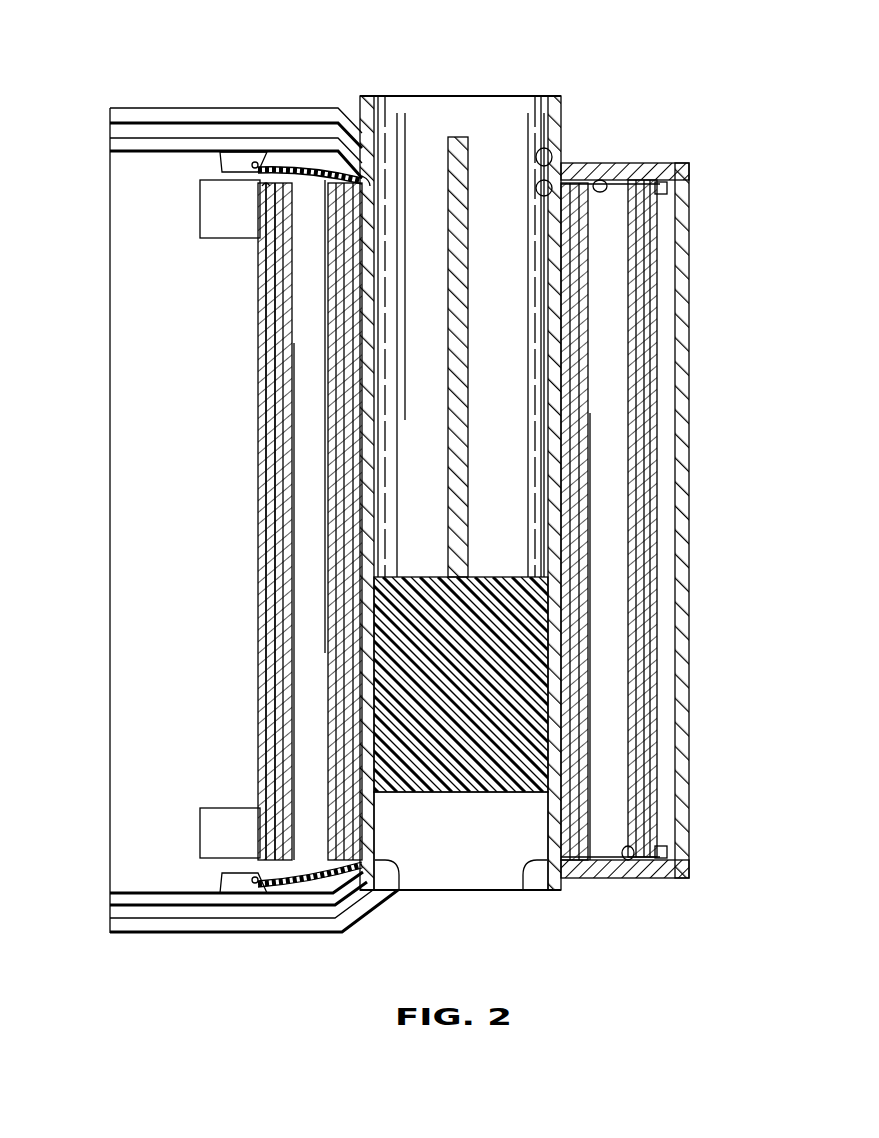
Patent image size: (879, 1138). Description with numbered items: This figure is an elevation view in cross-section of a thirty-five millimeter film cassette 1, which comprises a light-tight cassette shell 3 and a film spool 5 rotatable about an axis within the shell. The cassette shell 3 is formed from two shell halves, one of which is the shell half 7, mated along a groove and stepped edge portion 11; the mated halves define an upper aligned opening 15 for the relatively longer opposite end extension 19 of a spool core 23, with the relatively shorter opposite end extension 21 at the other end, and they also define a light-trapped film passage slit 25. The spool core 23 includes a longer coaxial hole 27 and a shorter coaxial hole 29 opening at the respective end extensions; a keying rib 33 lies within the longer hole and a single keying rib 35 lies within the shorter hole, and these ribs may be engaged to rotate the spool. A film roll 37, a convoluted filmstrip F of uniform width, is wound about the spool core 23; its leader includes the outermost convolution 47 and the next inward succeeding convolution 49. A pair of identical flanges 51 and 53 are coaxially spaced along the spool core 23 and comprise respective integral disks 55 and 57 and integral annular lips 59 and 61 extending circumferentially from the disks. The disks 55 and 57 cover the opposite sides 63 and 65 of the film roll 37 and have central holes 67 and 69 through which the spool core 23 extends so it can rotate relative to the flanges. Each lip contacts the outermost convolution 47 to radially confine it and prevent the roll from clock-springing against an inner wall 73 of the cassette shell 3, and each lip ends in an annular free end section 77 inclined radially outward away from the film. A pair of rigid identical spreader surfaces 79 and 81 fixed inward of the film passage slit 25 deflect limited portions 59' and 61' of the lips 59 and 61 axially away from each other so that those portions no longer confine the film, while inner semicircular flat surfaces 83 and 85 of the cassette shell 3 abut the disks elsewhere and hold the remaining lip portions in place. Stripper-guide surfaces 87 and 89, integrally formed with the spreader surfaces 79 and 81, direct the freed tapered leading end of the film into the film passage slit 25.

The film cassette 1 is at (188, 92).
The cassette shell 3 is at (698, 814).
The film spool 5 is at (252, 505).
The shell half 7 is at (242, 107).
The groove and stepped edge portion 11 is at (110, 132).
The upper aligned opening 15 is at (548, 155).
The longer opposite end extension 19 is at (563, 98).
The shorter opposite end extension 21 is at (560, 882).
The spool core 23 is at (505, 578).
The film passage slit 25 is at (135, 305).
The longer coaxial hole 27 is at (430, 98).
The shorter coaxial hole 29 is at (436, 862).
The keying rib 33 is at (470, 172).
The keying rib 35 is at (500, 795).
The film roll 37 is at (258, 340).
The outermost convolution 47 is at (262, 388).
The next inward succeeding convolution 49 is at (265, 430).
The flange 51 is at (262, 163).
The flange 53 is at (252, 895).
The disk 55 is at (305, 178).
The disk 57 is at (600, 857).
The annular lip 59 is at (699, 185).
The deflected portion of annular lip 59' is at (210, 165).
The annular lip 61 is at (704, 855).
The deflected portion of annular lip 61' is at (210, 878).
The side of film roll 63 is at (266, 186).
The side of film roll 65 is at (290, 858).
The central hole 67 is at (372, 181).
The central hole 69 is at (396, 890).
The inner wall 73 is at (676, 494).
The annular free end section 77 is at (718, 826).
The spreader surface 79 is at (192, 184).
The spreader surface 81 is at (202, 866).
The inner semicircular flat surface 83 is at (606, 180).
The inner semicircular flat surface 85 is at (618, 862).
The stripper-guide surface 87 is at (232, 240).
The stripper-guide surface 89 is at (242, 808).
The filmstrip F is at (314, 661).